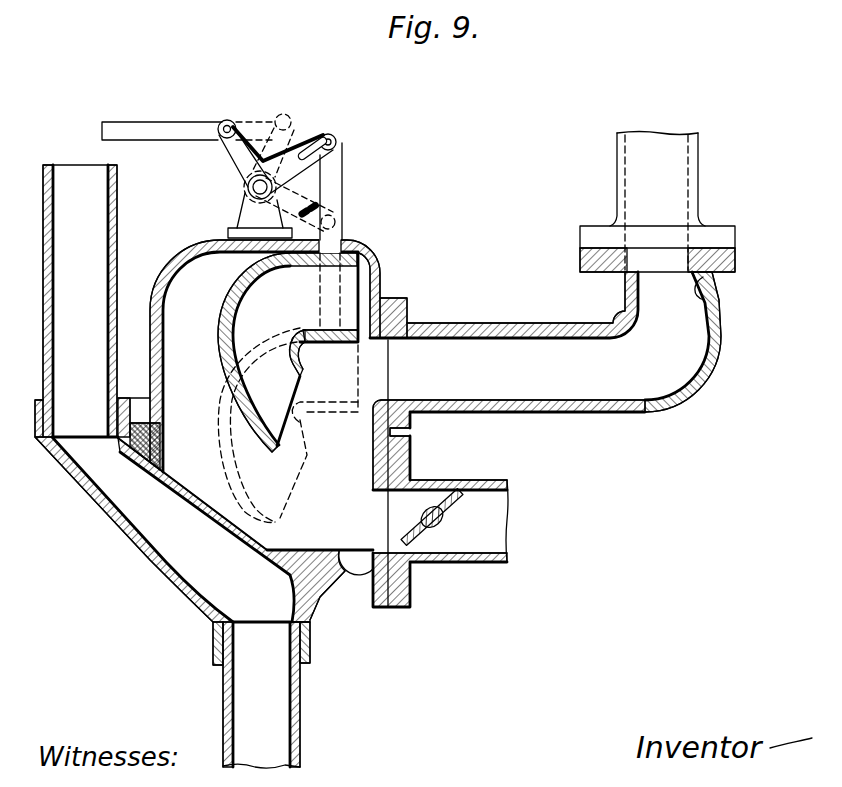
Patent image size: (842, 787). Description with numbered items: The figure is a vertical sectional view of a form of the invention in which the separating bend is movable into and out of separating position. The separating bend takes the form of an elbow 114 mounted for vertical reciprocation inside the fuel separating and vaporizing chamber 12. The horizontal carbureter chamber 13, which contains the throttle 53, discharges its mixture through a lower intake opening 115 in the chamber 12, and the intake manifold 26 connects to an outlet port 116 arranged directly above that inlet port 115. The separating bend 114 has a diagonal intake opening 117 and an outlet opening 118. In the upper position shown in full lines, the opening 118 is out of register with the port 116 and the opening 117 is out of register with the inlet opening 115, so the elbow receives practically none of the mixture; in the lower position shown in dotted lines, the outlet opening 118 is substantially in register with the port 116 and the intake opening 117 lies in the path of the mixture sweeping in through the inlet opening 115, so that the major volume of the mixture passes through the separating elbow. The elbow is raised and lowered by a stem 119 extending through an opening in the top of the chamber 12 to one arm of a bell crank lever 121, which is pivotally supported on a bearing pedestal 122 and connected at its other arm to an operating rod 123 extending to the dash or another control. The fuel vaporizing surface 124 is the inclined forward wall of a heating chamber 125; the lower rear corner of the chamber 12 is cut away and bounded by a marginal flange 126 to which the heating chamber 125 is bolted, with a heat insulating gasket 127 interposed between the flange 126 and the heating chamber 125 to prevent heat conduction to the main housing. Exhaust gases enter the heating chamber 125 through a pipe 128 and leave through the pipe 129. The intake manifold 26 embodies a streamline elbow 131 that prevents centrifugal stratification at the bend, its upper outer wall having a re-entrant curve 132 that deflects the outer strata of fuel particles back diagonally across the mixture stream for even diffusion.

The fuel separating and vaporizing chamber 12 is at (176, 266).
The horizontal carbureter chamber 13 is at (470, 565).
The intake manifold 26 is at (492, 323).
The throttle 53 is at (443, 480).
The separating bend elbow 114 is at (217, 337).
The lower intake opening 115 is at (380, 533).
The outlet port 116 is at (410, 317).
The diagonal intake opening 117 is at (273, 413).
The outlet opening 118 is at (347, 277).
The stem 119 is at (332, 193).
The bell crank lever 121 is at (300, 142).
The bearing pedestal 122 is at (248, 215).
The operating rod 123 is at (155, 130).
The fuel vaporizing surface 124 is at (183, 480).
The heating chamber 125 is at (98, 532).
The marginal flange 126 is at (345, 572).
The heat insulating gasket 127 is at (327, 585).
The exhaust pipe 128 is at (93, 202).
The exhaust outlet pipe 129 is at (275, 705).
The streamline elbow 131 is at (677, 358).
The re-entrant curve 132 is at (717, 292).